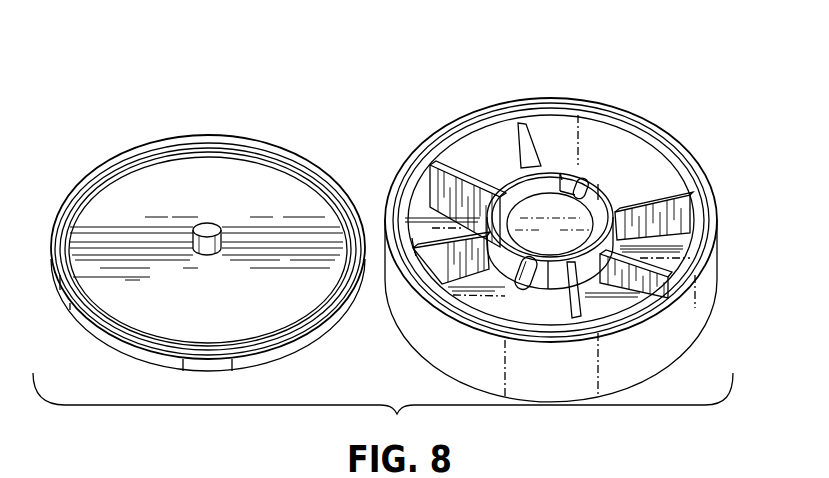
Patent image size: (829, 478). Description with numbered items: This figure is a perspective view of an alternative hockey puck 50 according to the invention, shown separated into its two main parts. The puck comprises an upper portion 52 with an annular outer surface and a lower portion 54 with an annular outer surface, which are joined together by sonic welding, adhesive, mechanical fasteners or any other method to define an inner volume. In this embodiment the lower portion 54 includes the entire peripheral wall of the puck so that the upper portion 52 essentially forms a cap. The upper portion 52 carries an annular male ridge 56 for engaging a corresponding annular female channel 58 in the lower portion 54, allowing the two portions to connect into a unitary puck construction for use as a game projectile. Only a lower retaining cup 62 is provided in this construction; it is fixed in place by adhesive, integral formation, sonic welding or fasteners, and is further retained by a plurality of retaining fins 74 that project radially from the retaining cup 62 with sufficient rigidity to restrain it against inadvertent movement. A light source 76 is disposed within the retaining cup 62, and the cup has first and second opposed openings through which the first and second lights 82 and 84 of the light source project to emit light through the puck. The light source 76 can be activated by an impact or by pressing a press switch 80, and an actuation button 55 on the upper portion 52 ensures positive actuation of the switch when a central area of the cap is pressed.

The hockey puck 50 is at (350, 92).
The upper portion 52 is at (233, 168).
The lower portion 54 is at (560, 127).
The actuation button 55 is at (207, 223).
The annular male ridge 56 is at (168, 139).
The annular female channel 58 is at (598, 108).
The lower retaining cup 62 is at (494, 172).
The retaining fins 74 is at (440, 166).
The light source 76 is at (598, 183).
The press switch 80 is at (598, 231).
The first light 82 is at (536, 282).
The second light 84 is at (598, 181).